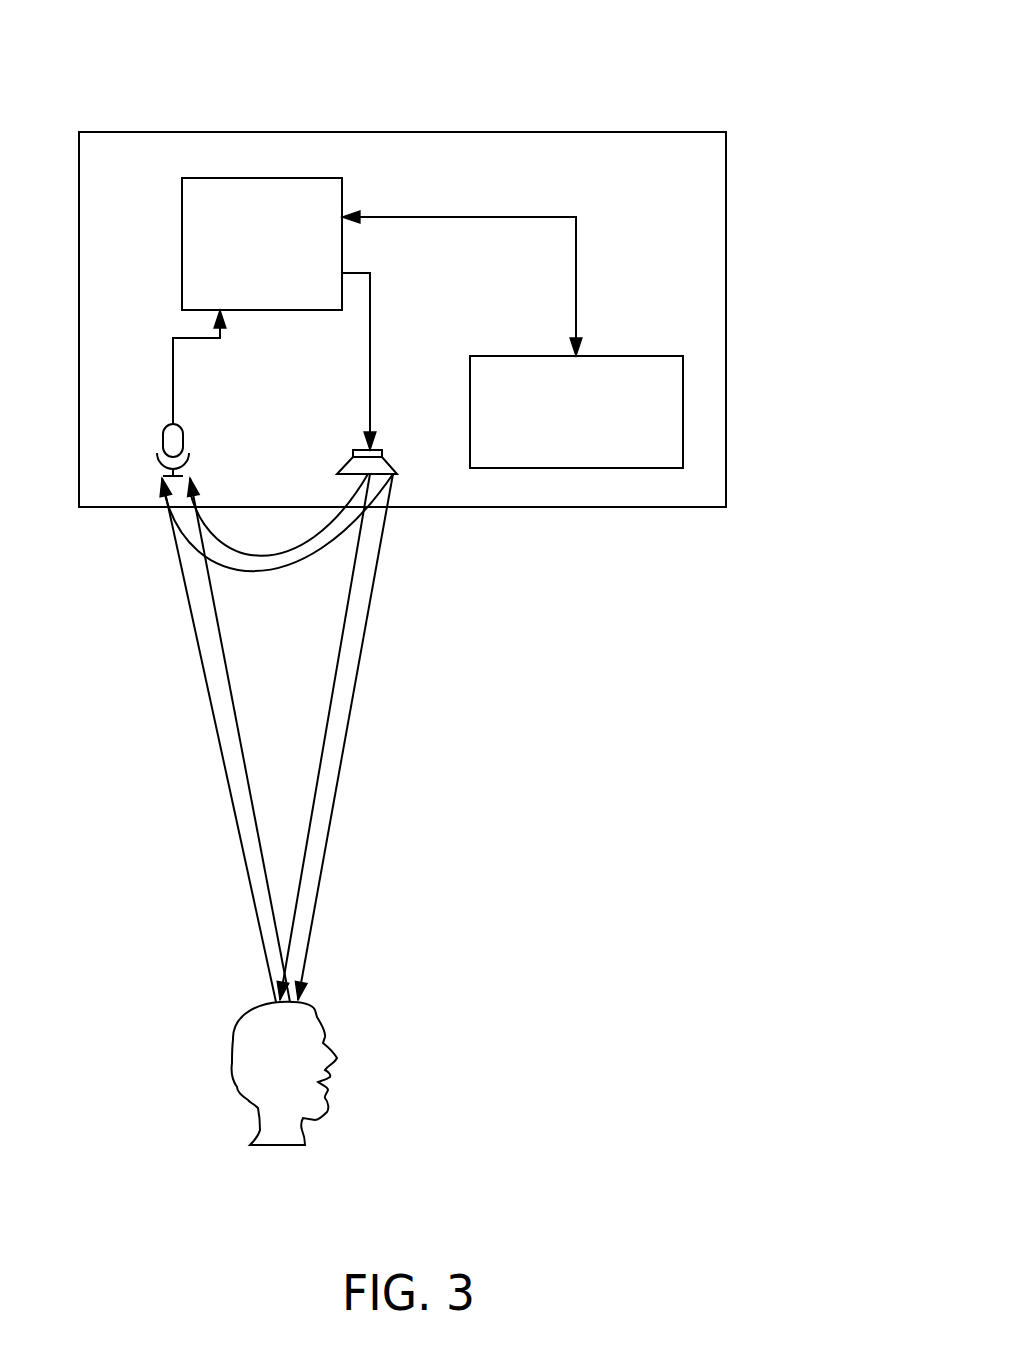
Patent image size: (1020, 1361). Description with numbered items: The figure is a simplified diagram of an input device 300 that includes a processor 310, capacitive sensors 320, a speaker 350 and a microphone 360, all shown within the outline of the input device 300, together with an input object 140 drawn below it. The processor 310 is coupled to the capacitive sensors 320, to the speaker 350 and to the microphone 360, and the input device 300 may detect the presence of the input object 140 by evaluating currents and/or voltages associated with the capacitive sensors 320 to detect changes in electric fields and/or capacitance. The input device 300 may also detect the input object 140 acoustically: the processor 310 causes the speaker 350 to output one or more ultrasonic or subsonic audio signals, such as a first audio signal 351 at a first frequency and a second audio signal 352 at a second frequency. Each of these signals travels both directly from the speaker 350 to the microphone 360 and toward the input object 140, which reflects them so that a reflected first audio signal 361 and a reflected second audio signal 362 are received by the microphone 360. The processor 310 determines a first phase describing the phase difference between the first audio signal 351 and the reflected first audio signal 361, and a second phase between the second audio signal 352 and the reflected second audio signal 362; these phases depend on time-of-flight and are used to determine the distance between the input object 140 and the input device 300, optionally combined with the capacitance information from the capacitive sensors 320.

The input device 300 is at (318, 132).
The processor 310 is at (282, 271).
The capacitive sensors 320 is at (597, 454).
The speaker 350 is at (397, 467).
The first audio signal 351 is at (260, 557).
The second audio signal 352 is at (238, 573).
The microphone 360 is at (162, 435).
The reflected first audio signal 361 is at (232, 690).
The reflected second audio signal 362 is at (207, 695).
The input object 140 is at (337, 1058).